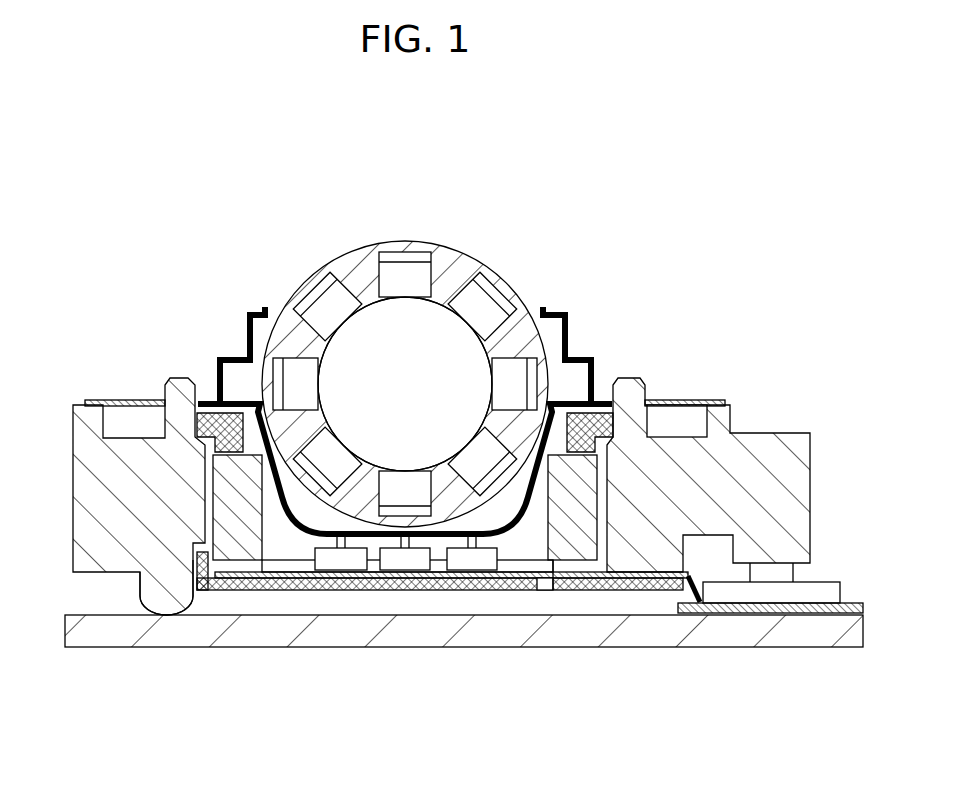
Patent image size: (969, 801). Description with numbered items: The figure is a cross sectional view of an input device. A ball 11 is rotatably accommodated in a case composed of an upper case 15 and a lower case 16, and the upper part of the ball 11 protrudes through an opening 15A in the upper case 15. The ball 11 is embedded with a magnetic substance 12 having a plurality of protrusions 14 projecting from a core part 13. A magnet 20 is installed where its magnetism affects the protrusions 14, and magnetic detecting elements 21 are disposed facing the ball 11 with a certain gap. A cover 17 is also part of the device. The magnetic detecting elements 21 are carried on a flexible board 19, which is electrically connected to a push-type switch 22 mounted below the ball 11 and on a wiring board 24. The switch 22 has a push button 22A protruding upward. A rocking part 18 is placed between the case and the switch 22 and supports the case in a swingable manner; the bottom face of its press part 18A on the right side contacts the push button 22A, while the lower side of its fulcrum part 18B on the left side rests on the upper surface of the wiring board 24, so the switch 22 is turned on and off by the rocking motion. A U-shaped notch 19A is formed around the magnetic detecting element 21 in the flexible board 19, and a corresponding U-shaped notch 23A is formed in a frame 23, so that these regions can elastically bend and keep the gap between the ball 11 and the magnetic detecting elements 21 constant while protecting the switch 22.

The ball 11 is at (347, 265).
The magnetic substance 12 is at (453, 323).
The core part 13 is at (470, 365).
The protrusions 14 is at (478, 305).
The upper case 15 is at (565, 340).
The opening 15A is at (273, 308).
The lower case 16 is at (595, 400).
The cover 17 is at (207, 400).
The rocking part 18 is at (145, 462).
The press part 18A is at (772, 448).
The fulcrum part 18B is at (165, 593).
The flexible board 19 is at (422, 560).
The notch 19A is at (260, 575).
The magnet 20 is at (232, 557).
The magnetic detecting elements 21 is at (393, 560).
The switch 22 is at (748, 592).
The push button 22A is at (778, 575).
The frame 23 is at (528, 570).
The notch 23A is at (550, 578).
The wiring board 24 is at (640, 620).